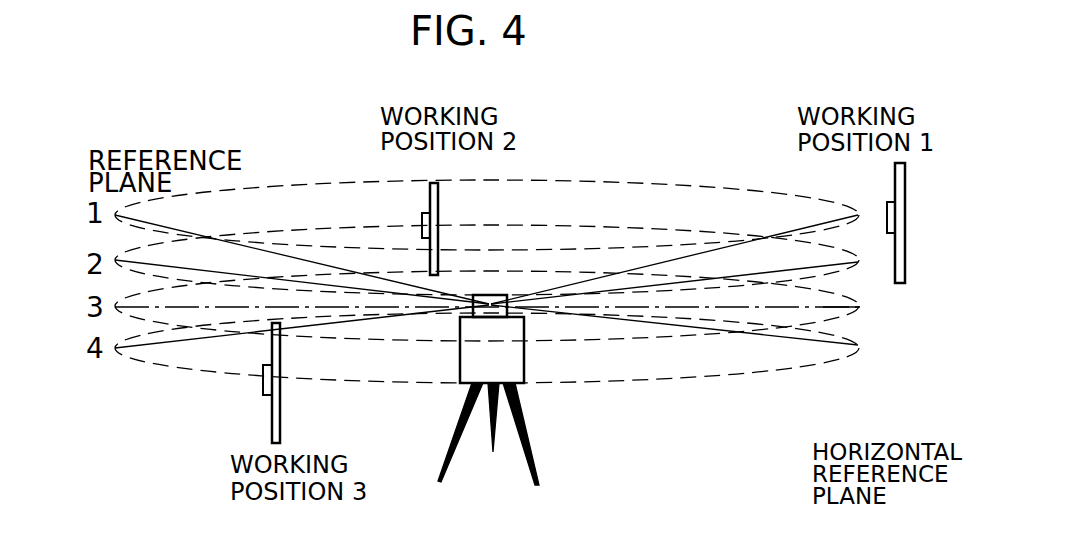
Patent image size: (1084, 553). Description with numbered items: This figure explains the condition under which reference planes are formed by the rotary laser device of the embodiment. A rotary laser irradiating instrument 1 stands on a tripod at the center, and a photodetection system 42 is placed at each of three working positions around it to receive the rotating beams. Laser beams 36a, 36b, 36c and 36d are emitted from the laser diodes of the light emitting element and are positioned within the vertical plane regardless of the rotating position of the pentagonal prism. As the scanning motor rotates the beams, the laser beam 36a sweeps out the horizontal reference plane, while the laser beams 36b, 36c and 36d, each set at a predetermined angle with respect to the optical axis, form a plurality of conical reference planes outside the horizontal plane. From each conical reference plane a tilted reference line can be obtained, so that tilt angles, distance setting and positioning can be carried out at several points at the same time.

The laser survey instrument 1 is at (524, 358).
The photodetection system 42 is at (422, 214).
The laser beam 36a is at (835, 310).
The laser beam 36b is at (835, 262).
The laser beam 36c is at (817, 243).
The laser beam 36d is at (822, 343).